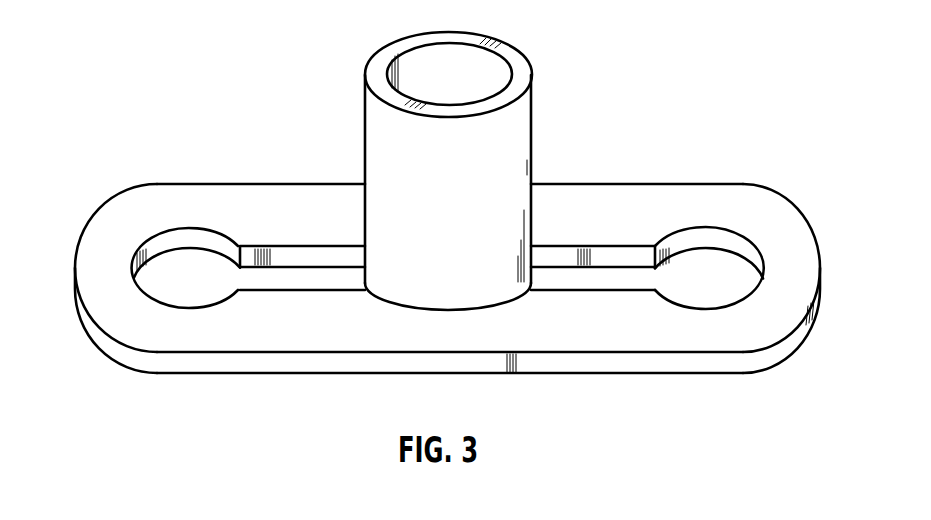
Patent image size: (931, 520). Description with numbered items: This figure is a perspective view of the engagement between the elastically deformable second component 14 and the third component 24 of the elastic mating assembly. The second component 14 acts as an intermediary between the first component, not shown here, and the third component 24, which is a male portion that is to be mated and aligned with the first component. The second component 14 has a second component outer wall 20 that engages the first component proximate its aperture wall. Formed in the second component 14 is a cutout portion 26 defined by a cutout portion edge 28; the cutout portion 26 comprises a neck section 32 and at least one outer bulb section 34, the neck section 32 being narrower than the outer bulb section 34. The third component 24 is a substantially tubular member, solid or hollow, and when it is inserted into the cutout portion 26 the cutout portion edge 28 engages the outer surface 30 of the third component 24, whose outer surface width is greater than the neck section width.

The elastically deformable second component 14 is at (100, 193).
The second component outer wall 20 is at (291, 367).
The third component 24 is at (526, 42).
The cutout portion 26 is at (219, 247).
The cutout portion edge 28 is at (152, 296).
The outer surface 30 is at (533, 112).
The neck section 32 is at (308, 266).
The outer bulb section 34 is at (708, 264).